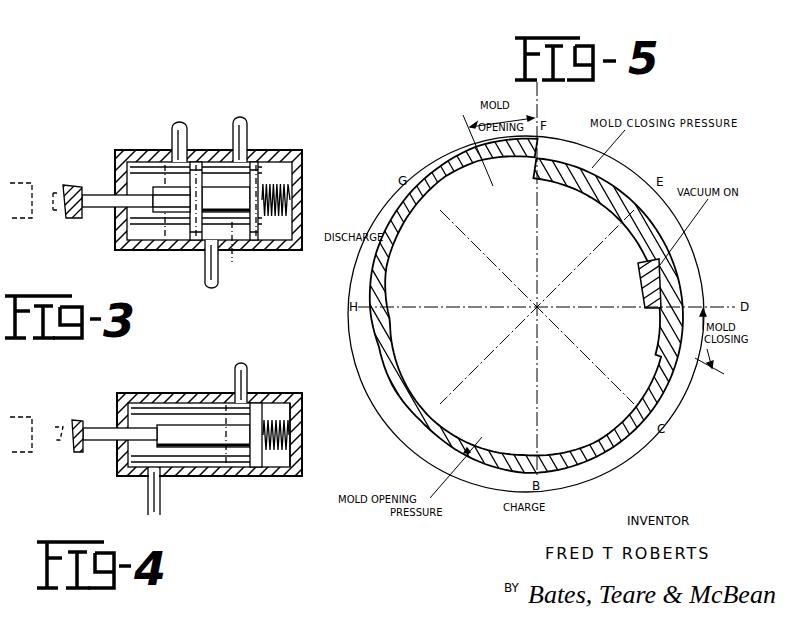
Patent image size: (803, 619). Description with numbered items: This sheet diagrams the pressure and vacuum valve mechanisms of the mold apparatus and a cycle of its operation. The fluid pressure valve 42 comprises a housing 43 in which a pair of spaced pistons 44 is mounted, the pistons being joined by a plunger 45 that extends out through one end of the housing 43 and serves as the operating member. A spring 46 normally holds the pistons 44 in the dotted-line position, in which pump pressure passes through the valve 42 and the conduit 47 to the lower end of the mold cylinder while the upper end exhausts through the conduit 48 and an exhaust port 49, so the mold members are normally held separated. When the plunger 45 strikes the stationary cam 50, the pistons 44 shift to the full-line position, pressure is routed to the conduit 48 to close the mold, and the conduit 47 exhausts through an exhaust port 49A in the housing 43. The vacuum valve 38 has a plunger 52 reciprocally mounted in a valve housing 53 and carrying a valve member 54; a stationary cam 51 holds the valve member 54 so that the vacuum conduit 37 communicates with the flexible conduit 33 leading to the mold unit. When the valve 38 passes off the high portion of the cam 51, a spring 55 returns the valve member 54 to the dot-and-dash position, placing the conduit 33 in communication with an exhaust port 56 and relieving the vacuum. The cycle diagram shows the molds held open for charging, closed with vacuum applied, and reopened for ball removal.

In FIG. 4, the conduit 33 is at (232, 365).
In FIG. 4, the conduit 37 is at (150, 500).
In FIG. 4, the valve 38 is at (198, 477).
In FIG. 3, the fluid pressure valve 42 is at (302, 200).
In FIG. 3, the housing 43 is at (289, 152).
In FIG. 3, the pistons 44 is at (165, 165).
In FIG. 3, the plunger 45 is at (90, 196).
In FIG. 3, the spring 46 is at (283, 191).
In FIG. 3, the conduit 47 is at (175, 129).
In FIG. 3, the conduit 48 is at (242, 123).
In FIG. 3, the exhaust port 49 is at (276, 252).
In FIG. 3, the exhaust port 49A is at (146, 252).
In FIG. 3, the stationary cam 50 is at (72, 186).
In FIG. 4, the stationary cam 51 is at (75, 422).
In FIG. 4, the plunger 52 is at (95, 426).
In FIG. 4, the valve housing 53 is at (172, 395).
In FIG. 4, the valve member 54 is at (256, 410).
In FIG. 4, the spring 55 is at (290, 433).
In FIG. 4, the exhaust port 56 is at (292, 393).